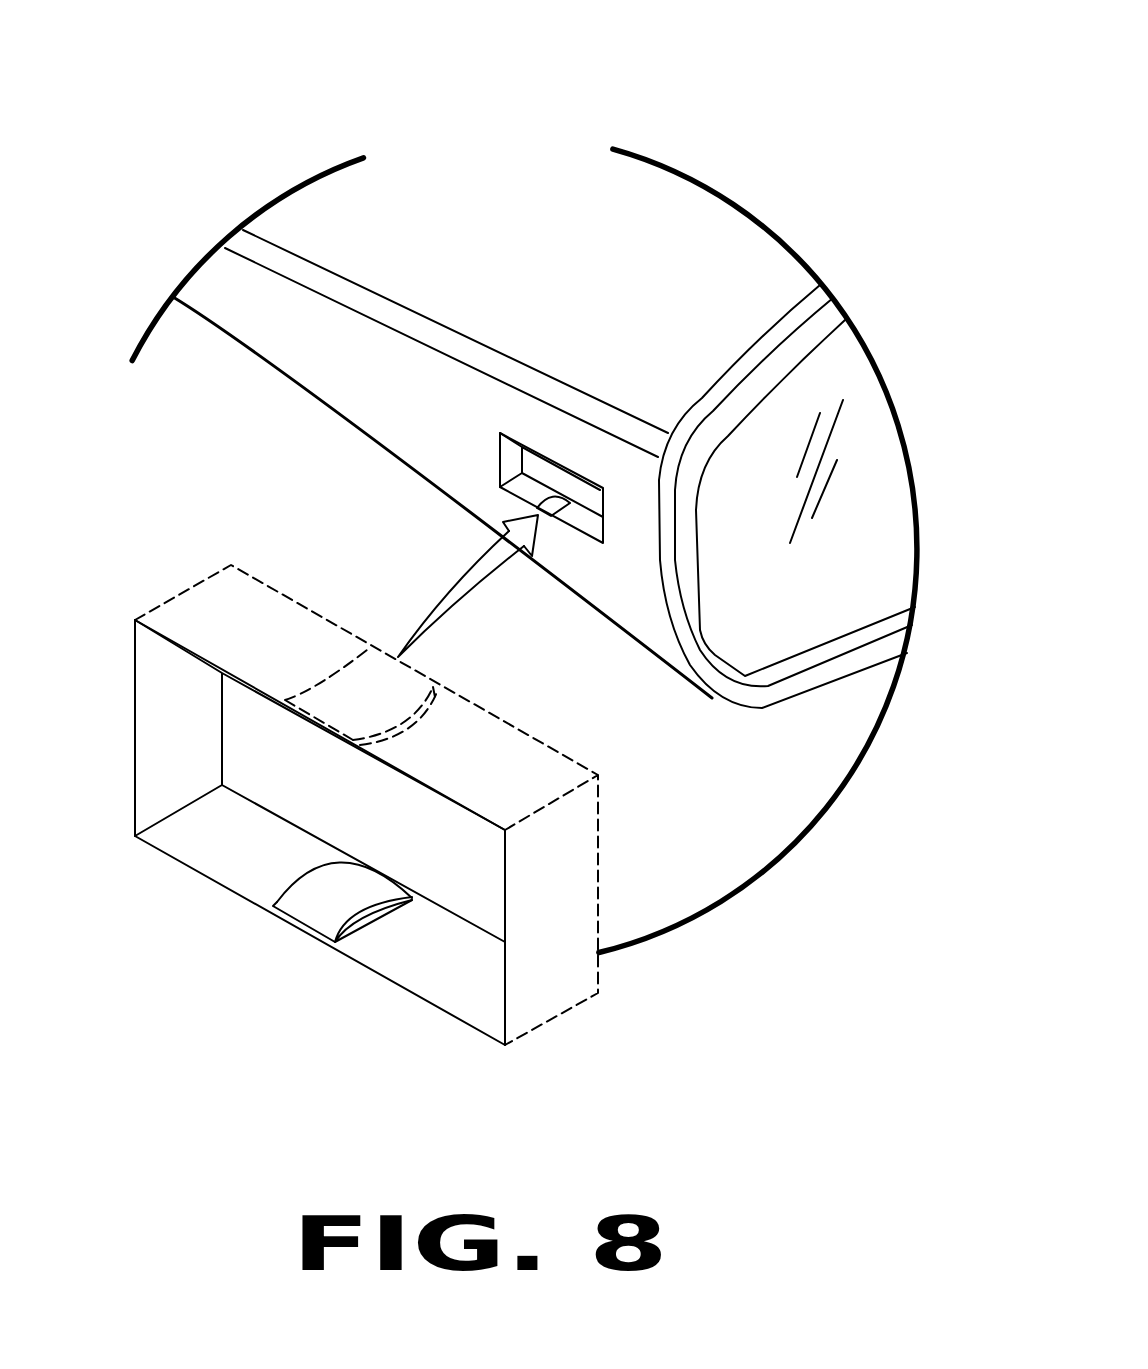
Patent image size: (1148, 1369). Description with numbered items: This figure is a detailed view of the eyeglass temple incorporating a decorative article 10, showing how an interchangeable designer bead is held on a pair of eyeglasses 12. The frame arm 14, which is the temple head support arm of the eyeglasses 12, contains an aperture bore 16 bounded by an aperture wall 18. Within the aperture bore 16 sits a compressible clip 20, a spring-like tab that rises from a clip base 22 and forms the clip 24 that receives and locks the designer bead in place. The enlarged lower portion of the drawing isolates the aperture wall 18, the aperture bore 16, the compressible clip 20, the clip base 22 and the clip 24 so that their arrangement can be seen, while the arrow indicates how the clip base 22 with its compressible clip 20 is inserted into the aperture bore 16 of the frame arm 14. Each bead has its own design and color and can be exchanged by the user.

The eyeglass temple incorporating decorative article 10 is at (511, 180).
The eyeglasses 12 is at (770, 690).
The frame arm 14 is at (343, 292).
The aperture bore 16 is at (538, 468).
The aperture wall 18 is at (510, 450).
The compressible clip 20 is at (552, 495).
The clip base 22 is at (258, 952).
The clip 24 is at (557, 507).